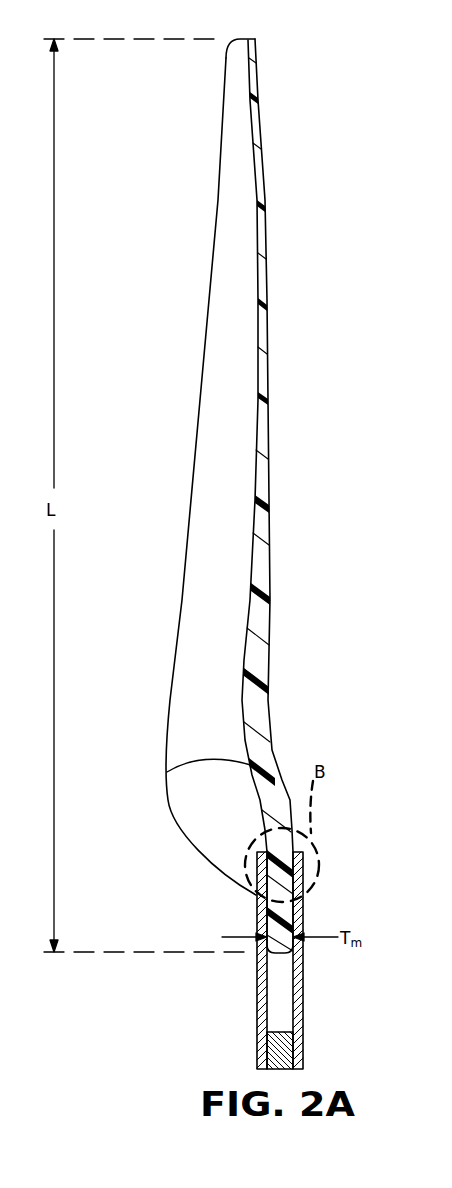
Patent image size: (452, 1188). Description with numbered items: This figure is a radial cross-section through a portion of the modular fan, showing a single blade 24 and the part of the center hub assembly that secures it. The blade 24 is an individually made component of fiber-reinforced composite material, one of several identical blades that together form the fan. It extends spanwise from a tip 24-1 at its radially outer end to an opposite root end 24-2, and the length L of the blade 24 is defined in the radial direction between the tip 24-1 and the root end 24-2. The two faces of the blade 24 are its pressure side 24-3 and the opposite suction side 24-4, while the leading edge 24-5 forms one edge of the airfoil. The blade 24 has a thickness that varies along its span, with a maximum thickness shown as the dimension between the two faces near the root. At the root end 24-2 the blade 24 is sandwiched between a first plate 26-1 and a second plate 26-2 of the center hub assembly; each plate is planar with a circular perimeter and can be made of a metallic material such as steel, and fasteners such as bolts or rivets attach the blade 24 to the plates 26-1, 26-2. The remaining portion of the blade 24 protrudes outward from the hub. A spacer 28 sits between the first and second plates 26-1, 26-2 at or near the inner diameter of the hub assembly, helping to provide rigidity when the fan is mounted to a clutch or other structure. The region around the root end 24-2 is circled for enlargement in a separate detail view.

The blade 24 is at (259, 568).
The tip 24-1 is at (254, 39).
The root end 24-2 is at (279, 953).
The pressure side 24-3 is at (234, 345).
The suction side 24-4 is at (270, 340).
The leading edge 24-5 is at (178, 621).
The first plate 26-1 is at (295, 1017).
The second plate 26-2 is at (257, 981).
The spacer 28 is at (285, 1046).